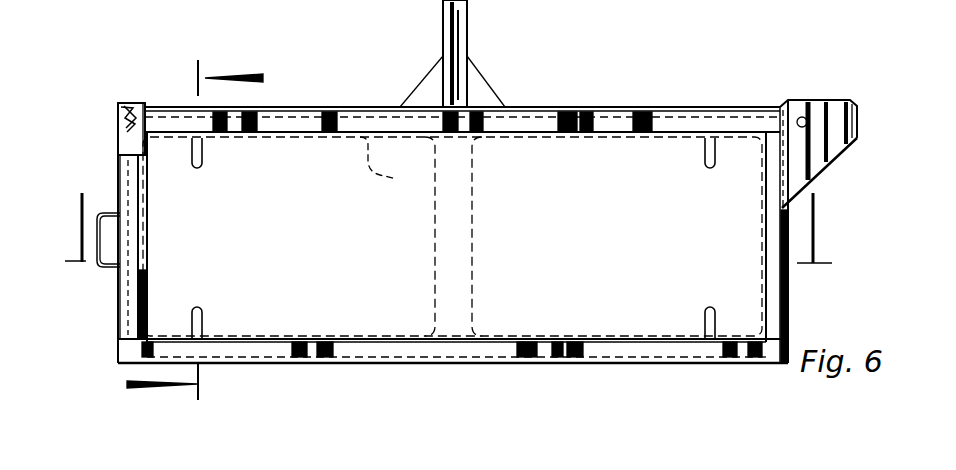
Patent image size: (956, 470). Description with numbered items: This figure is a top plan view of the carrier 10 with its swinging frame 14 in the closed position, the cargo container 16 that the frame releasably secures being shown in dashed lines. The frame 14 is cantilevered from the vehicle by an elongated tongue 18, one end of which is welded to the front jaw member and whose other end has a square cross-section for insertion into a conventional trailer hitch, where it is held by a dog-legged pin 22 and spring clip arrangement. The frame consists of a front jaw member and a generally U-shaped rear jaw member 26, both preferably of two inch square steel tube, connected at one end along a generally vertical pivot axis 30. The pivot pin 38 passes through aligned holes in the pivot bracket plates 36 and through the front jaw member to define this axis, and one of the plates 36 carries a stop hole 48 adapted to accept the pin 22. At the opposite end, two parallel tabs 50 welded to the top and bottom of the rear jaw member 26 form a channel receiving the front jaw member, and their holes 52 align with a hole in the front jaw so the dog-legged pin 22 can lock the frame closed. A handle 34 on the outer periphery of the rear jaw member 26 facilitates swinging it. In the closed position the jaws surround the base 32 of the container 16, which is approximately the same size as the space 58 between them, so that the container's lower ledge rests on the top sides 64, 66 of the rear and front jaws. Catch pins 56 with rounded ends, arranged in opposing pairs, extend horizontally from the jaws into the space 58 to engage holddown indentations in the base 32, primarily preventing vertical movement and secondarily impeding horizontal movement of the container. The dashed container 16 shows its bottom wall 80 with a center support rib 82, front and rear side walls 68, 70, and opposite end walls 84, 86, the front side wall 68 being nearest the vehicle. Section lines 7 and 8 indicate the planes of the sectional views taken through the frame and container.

The section line 7- 7 is at (195, 233).
The section line 8- 8 is at (451, 229).
The carrier 10 is at (766, 93).
The swinging frame 14 is at (693, 94).
The cargo container 16 is at (657, 97).
The elongated tongue 18 is at (467, 40).
The dog-legged pin 22 is at (123, 104).
The rear jaw member 26 is at (583, 98).
The vertical pivot axis 30 is at (796, 122).
The base 32 is at (677, 110).
The handle 34 is at (143, 197).
The pivot bracket plates 36 is at (857, 100).
The pivot pin 38 is at (802, 100).
The stop hole 48 is at (823, 172).
The tabs 50 is at (120, 115).
The aligned holes 52 is at (120, 132).
The catch pins 56 is at (202, 156).
The space 58 is at (251, 259).
The top side 64 is at (322, 364).
The top side 66 is at (570, 114).
The front side wall 68 is at (533, 105).
The rear side wall 70 is at (380, 362).
The bottom wall 80 is at (390, 166).
The center support rib 82 is at (472, 210).
The end wall 84 is at (120, 214).
The end wall 86 is at (783, 222).